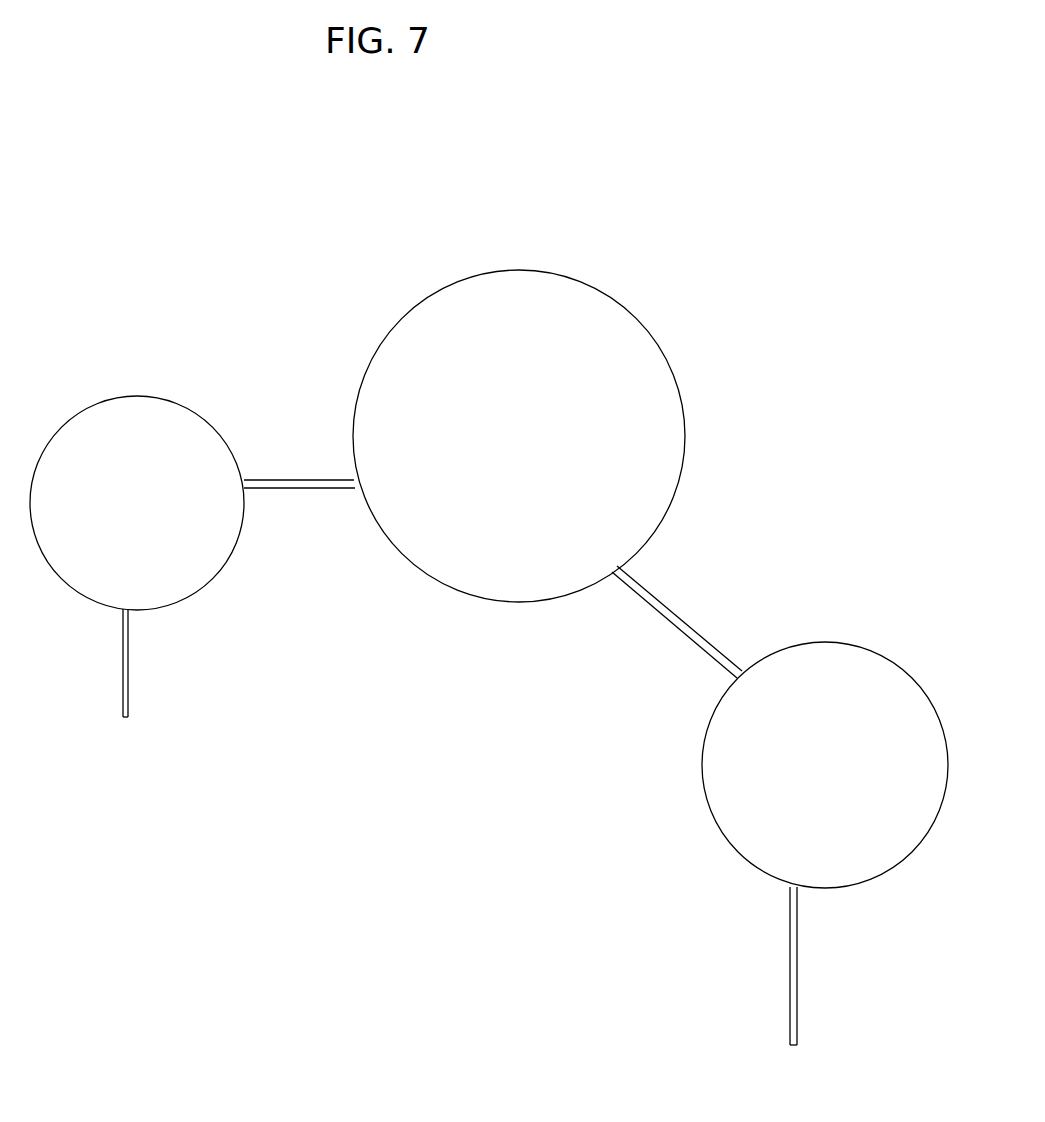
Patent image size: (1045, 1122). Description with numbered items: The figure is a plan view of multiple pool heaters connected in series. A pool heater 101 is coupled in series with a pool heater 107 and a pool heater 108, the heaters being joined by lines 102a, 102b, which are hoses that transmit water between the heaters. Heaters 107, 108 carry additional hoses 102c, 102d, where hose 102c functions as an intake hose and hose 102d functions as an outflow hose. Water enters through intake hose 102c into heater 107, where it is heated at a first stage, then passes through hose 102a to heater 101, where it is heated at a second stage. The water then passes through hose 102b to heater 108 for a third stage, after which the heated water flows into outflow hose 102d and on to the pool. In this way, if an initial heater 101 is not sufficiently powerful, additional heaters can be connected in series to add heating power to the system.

The pool heater 101 is at (490, 317).
The pool heater 107 is at (173, 447).
The pool heater 108 is at (723, 787).
The line 102a is at (293, 492).
The line 102b is at (672, 625).
The hose 102c is at (129, 650).
The hose 102d is at (792, 948).